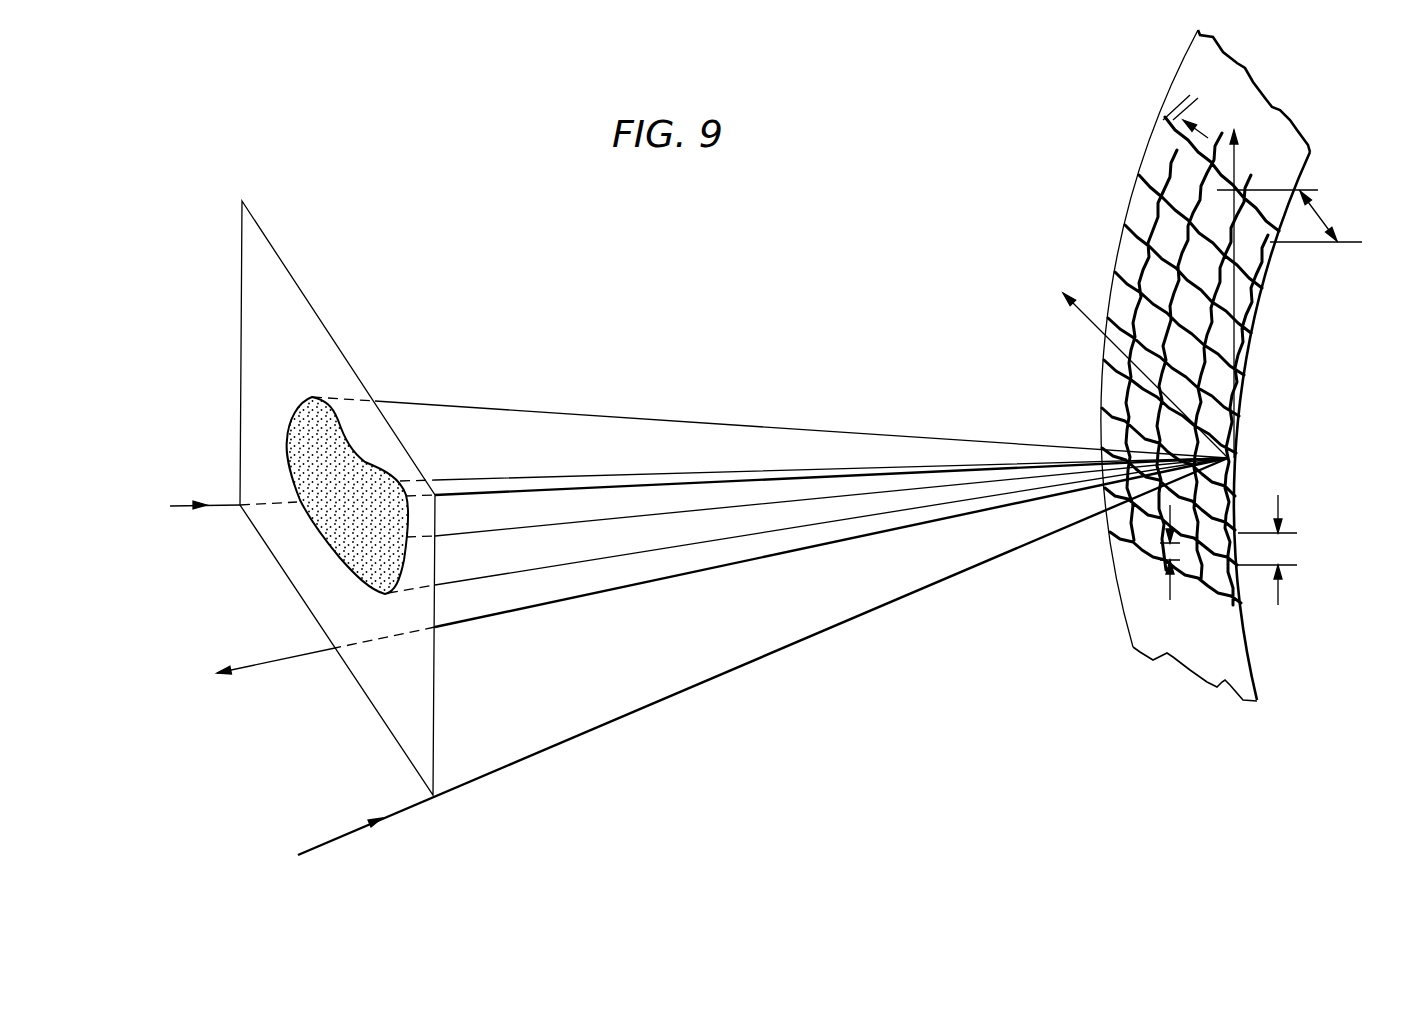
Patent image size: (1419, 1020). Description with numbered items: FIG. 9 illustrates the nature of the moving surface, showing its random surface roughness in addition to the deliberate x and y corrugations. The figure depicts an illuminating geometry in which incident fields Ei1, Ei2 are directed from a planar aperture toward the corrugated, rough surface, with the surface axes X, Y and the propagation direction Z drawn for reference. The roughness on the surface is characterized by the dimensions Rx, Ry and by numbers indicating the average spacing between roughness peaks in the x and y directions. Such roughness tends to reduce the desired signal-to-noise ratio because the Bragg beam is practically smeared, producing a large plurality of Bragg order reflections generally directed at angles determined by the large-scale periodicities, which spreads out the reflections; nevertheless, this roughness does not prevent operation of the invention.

The incident field/ray E_i1 Ei1 is at (328, 848).
The incident field/ray E_i2 Ei2 is at (178, 508).
The X axis of surface X is at (1232, 281).
The Y axis of surface Y is at (1134, 369).
The Z axis (propagation direction) Z is at (711, 575).
The surface roughness spacing in x Rx is at (1171, 566).
The surface roughness spacing in y Ry is at (1168, 117).